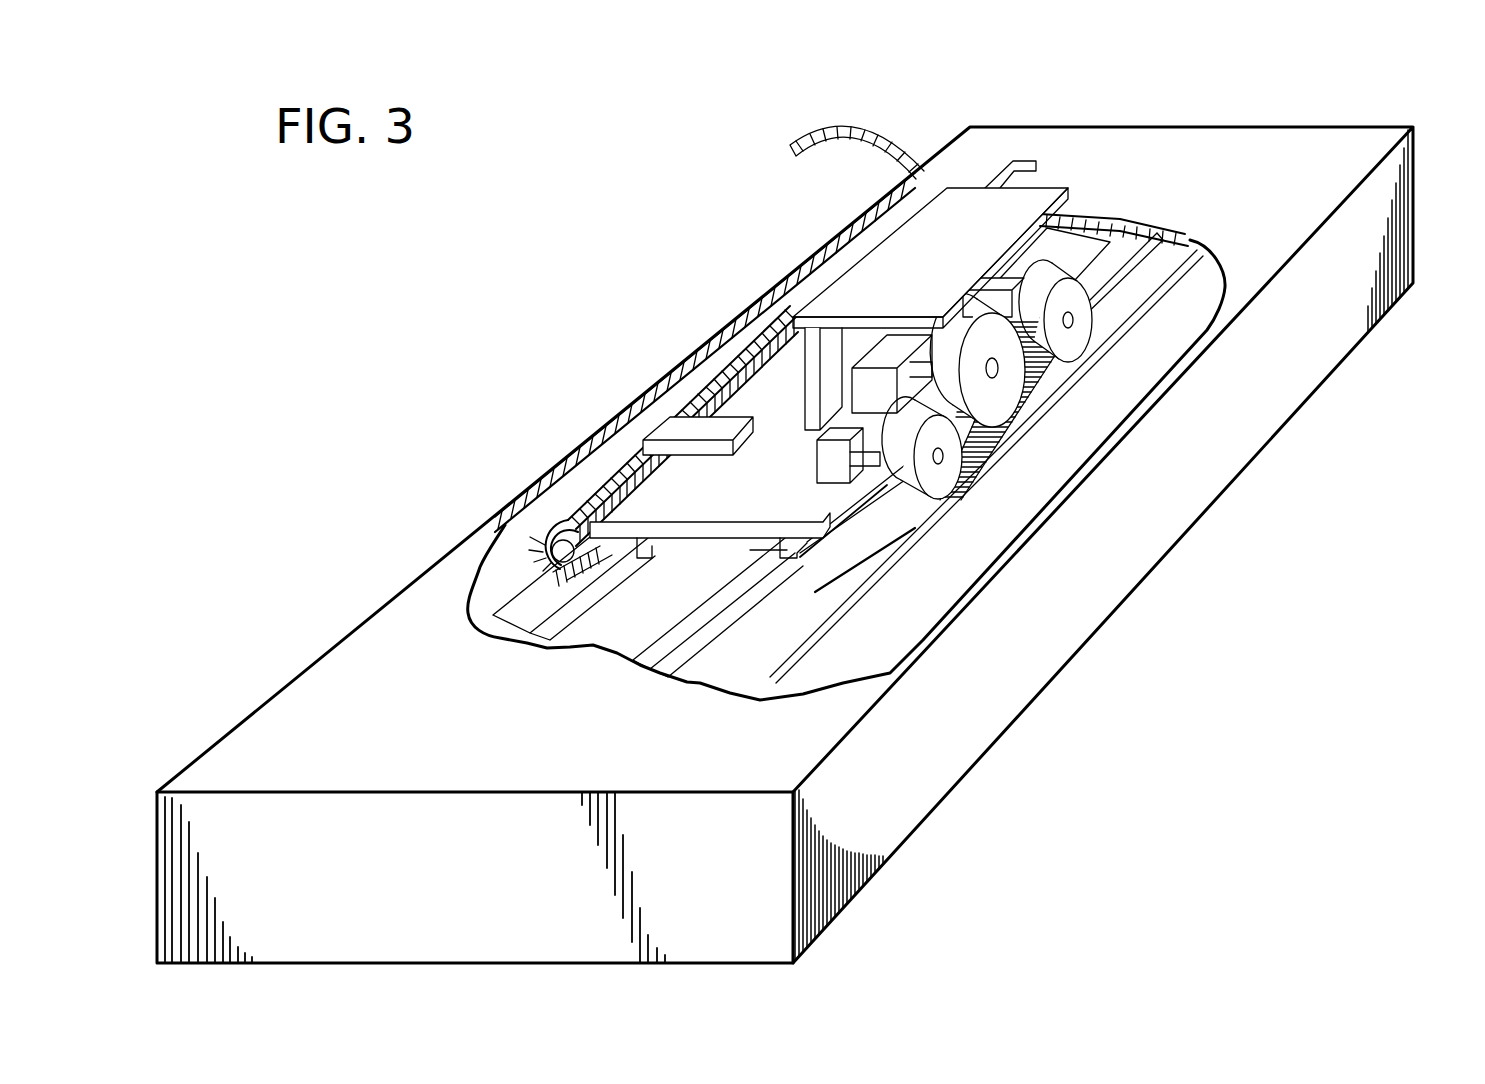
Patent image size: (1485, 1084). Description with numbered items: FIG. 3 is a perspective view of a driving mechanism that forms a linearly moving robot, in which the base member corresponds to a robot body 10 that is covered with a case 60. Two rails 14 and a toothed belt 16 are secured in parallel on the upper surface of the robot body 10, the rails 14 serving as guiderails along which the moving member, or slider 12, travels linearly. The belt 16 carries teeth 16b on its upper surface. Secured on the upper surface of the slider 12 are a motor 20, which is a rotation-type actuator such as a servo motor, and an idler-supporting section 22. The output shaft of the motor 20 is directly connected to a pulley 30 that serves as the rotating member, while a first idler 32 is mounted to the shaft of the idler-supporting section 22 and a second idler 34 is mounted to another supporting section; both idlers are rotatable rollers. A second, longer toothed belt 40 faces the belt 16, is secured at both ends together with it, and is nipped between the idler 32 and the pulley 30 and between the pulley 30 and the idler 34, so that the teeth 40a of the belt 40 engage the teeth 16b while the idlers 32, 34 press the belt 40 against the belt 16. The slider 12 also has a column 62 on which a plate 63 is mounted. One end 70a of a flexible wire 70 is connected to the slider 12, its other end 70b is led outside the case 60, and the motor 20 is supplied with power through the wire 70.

The robot body 10 is at (1030, 478).
The moving member 12 is at (780, 420).
The rails 14 is at (530, 618).
The toothed belt 16 is at (885, 495).
The teeth 16b is at (1007, 397).
The motor 20 is at (893, 350).
The idler-supporting section 22 is at (960, 500).
The pulley 30 is at (1000, 420).
The first idler 32 is at (890, 572).
The second idler 34 is at (1083, 328).
The toothed belt 40 is at (837, 593).
The teeth 40a is at (1023, 487).
The case 60 is at (1337, 322).
The column 62 is at (812, 380).
The plate 63 is at (1043, 200).
The flexible wire 70 is at (540, 550).
The one end of the flexible wire 70a is at (620, 463).
The other end of the flexible wire 70b is at (808, 152).